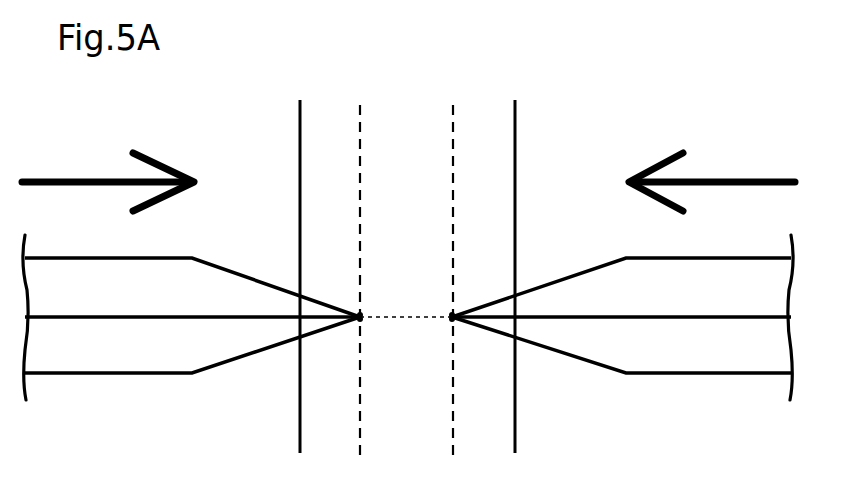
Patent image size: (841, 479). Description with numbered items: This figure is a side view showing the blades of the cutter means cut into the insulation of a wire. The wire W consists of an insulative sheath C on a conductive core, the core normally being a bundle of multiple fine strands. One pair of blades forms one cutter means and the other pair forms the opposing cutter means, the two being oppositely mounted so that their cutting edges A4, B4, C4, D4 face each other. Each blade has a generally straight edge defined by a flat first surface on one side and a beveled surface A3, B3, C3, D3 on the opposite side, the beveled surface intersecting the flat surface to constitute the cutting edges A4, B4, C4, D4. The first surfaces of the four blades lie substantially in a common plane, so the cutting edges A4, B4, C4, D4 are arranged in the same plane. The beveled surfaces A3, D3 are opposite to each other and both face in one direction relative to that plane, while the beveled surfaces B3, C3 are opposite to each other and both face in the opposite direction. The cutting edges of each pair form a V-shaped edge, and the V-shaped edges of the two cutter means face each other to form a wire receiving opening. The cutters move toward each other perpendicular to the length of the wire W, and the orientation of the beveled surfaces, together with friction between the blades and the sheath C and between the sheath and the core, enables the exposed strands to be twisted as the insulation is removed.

The wire W is at (292, 140).
The insulative sheath C is at (490, 161).
The beveled surface of blade A A3 is at (261, 280).
The beveled surface of blade B B3 is at (266, 350).
The cutting edge of blade A A4 is at (355, 308).
The cutting edge of blade B B4 is at (357, 324).
The beveled surface of blade D D3 is at (554, 274).
The beveled surface of blade C C3 is at (536, 347).
The cutting edge of blade D D4 is at (457, 308).
The cutting edge of blade C C4 is at (455, 324).